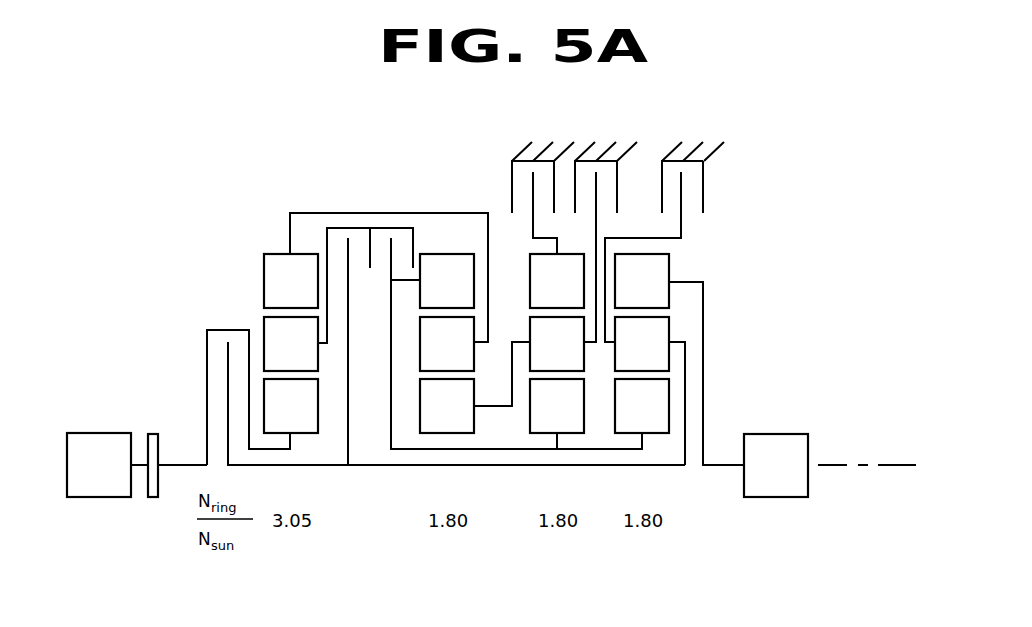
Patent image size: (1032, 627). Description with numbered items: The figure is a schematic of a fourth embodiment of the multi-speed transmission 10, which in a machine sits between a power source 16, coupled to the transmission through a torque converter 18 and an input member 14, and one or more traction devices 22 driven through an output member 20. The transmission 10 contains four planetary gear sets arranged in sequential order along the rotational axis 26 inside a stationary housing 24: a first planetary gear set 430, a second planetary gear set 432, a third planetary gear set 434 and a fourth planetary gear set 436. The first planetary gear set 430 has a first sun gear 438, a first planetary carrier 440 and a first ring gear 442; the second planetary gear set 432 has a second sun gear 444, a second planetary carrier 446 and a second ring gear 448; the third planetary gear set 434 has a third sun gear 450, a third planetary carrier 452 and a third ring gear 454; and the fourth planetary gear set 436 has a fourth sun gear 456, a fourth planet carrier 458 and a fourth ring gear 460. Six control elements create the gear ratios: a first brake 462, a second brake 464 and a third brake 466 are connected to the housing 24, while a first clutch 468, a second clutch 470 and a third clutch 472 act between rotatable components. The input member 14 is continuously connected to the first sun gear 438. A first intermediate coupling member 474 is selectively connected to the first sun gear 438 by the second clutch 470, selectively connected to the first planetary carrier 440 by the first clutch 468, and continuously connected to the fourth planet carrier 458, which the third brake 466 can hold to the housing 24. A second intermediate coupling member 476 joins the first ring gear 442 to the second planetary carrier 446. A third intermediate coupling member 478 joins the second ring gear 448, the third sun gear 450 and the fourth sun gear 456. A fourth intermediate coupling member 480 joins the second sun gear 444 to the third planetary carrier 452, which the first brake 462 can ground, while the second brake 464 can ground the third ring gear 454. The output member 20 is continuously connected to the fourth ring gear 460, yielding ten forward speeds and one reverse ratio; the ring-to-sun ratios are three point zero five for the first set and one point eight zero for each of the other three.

The multi-speed transmission 10 is at (247, 164).
The input member 14 is at (194, 465).
The power source 16 is at (85, 479).
The torque converter 18 is at (148, 436).
The output member 20 is at (722, 465).
The traction devices 22 is at (762, 479).
The stationary housing 24 is at (518, 152).
The rotational axis 26 is at (843, 462).
The first planetary gear set 430 is at (272, 250).
The second planetary gear set 432 is at (427, 251).
The third planetary gear set 434 is at (522, 268).
The fourth planetary gear set 436 is at (685, 257).
The first sun gear 438 is at (275, 420).
The first planetary carrier 440 is at (275, 358).
The first ring gear 442 is at (275, 295).
The second sun gear 444 is at (431, 420).
The second planetary carrier 446 is at (431, 358).
The second ring gear 448 is at (431, 295).
The third sun gear 450 is at (541, 420).
The third planetary carrier 452 is at (541, 358).
The third ring gear 454 is at (541, 295).
The fourth sun gear 456 is at (626, 420).
The fourth planet carrier 458 is at (626, 358).
The fourth ring gear 460 is at (626, 295).
The first brake 462 is at (618, 177).
The second brake 464 is at (512, 168).
The third brake 466 is at (704, 183).
The first clutch 468 is at (337, 228).
The second clutch 470 is at (222, 330).
The third clutch 472 is at (387, 228).
The first intermediate coupling member 474 is at (348, 466).
The second intermediate coupling member 476 is at (405, 213).
The third intermediate coupling member 478 is at (390, 442).
The fourth intermediate coupling member 480 is at (485, 407).